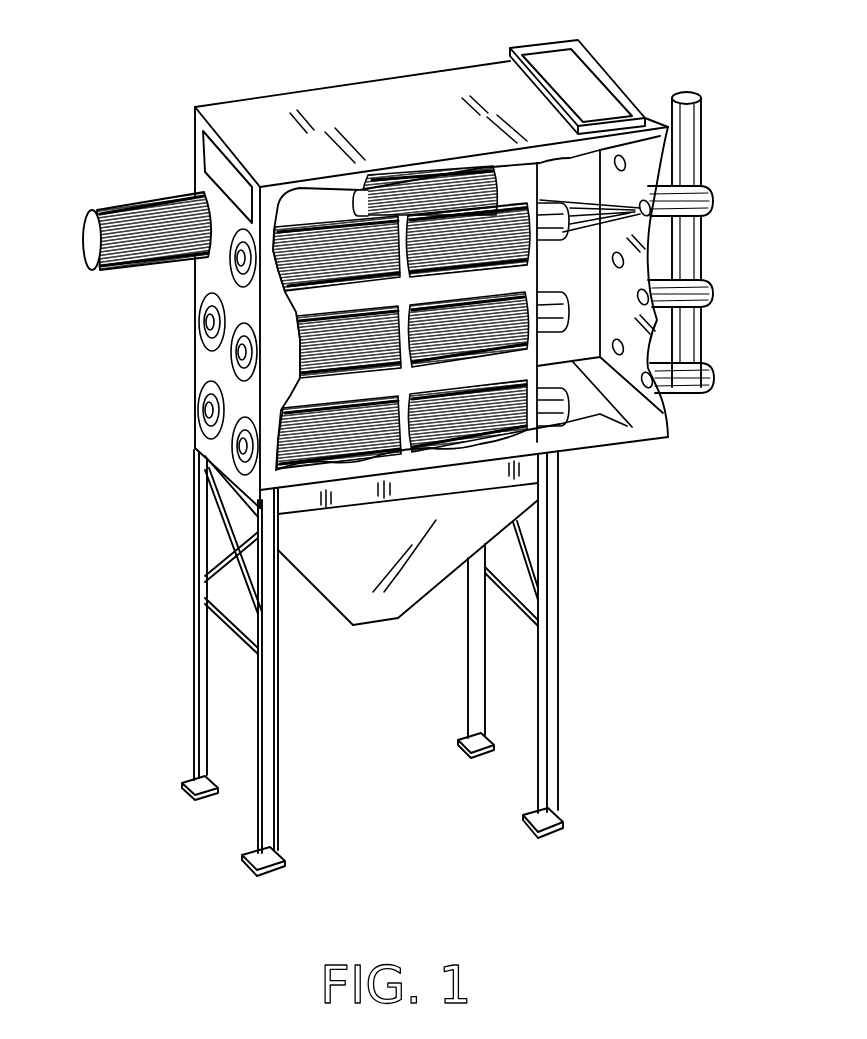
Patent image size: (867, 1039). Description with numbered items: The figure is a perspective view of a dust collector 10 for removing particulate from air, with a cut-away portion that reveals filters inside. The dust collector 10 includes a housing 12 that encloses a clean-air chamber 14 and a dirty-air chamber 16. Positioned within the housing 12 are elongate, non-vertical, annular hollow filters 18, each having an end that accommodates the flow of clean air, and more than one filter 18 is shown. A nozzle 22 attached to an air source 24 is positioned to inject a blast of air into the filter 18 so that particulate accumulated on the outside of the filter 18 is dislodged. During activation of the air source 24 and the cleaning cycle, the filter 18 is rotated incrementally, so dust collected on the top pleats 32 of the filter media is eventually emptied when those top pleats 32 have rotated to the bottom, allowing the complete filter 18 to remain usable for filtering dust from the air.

The dust collector 10 is at (158, 72).
The housing 12 is at (462, 97).
The clean-air chamber 14 is at (603, 390).
The dirty-air chamber 16 is at (320, 205).
The filter 18 is at (292, 298).
The nozzle 22 is at (645, 207).
The air source 24 is at (702, 186).
The top pleats 32 is at (142, 226).